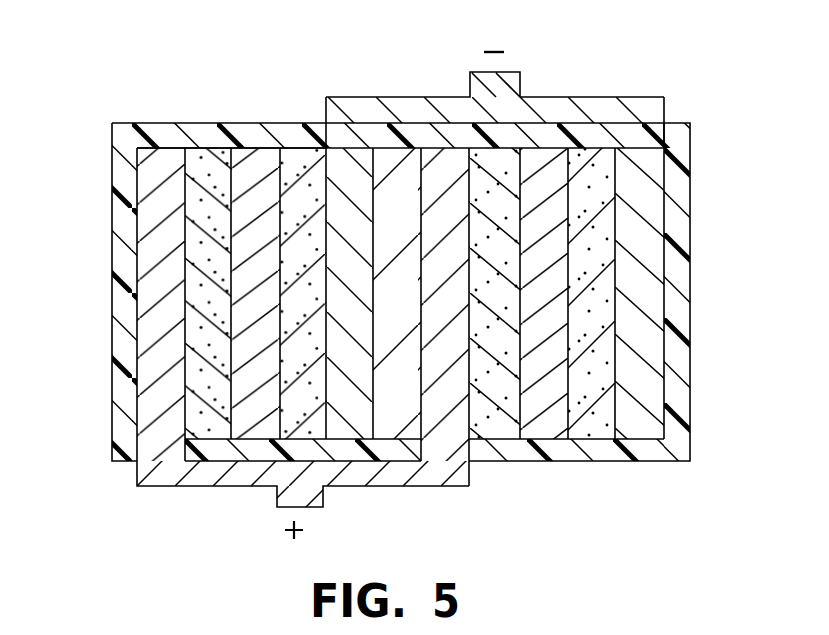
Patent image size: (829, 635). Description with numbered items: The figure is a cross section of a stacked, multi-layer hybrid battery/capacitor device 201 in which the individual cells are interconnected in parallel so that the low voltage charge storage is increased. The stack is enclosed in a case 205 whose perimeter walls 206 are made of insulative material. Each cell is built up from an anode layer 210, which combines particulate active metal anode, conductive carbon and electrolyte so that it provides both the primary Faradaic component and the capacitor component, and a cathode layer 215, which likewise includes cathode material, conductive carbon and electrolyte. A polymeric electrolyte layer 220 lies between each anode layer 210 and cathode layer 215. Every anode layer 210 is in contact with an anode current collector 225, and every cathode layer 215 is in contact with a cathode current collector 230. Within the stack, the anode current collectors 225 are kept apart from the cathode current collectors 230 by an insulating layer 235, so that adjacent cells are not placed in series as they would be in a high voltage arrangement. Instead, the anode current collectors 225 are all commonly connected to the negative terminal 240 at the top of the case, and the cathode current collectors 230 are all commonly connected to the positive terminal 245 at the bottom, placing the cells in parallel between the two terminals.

The device 201 is at (186, 100).
The case 205 is at (708, 168).
The perimeter walls 206 is at (120, 338).
The anode layer 210 is at (257, 470).
The cathode layer 215 is at (222, 150).
The polymeric electrolyte layer 220 is at (268, 155).
The anode current collector 225 is at (360, 140).
The cathode current collector 230 is at (148, 447).
The insulating layer 235 is at (403, 150).
The negative terminal 240 is at (595, 103).
The positive terminal 245 is at (165, 477).